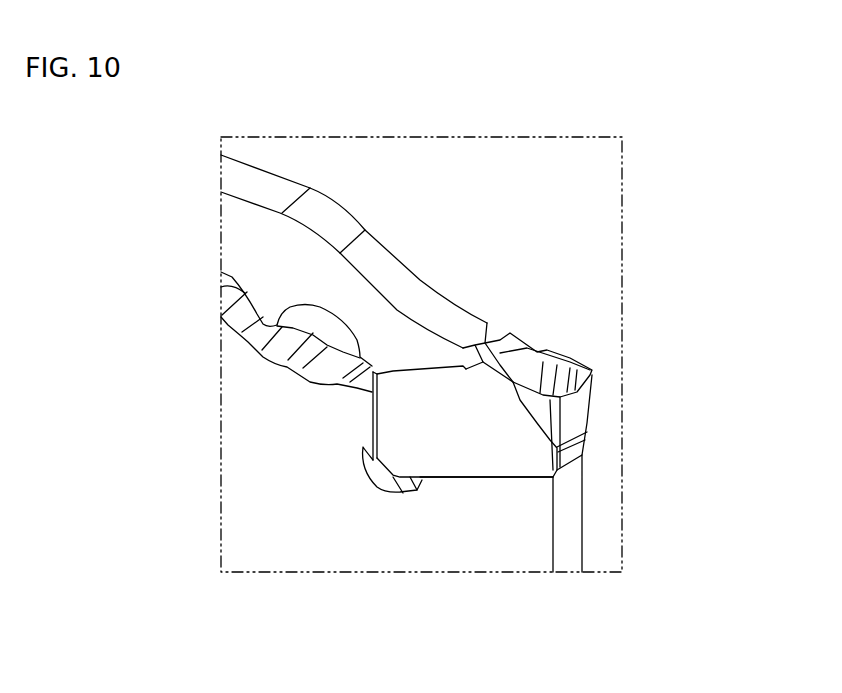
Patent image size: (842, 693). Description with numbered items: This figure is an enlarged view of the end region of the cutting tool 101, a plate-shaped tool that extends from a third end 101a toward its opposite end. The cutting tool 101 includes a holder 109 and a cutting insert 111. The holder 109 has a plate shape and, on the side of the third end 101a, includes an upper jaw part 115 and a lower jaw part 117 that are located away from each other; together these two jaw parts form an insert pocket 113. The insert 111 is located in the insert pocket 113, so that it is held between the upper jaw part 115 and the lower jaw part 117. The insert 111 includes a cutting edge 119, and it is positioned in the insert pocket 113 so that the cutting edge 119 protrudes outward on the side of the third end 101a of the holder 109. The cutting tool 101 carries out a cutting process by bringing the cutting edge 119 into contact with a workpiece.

The cutting tool 101 is at (408, 112).
The third end 101a is at (572, 512).
The holder 109 is at (247, 433).
The cutting insert 111 is at (462, 400).
The insert pocket 113 is at (457, 477).
The upper jaw part 115 is at (420, 303).
The lower jaw part 117 is at (483, 540).
The cutting edge 119 is at (596, 386).